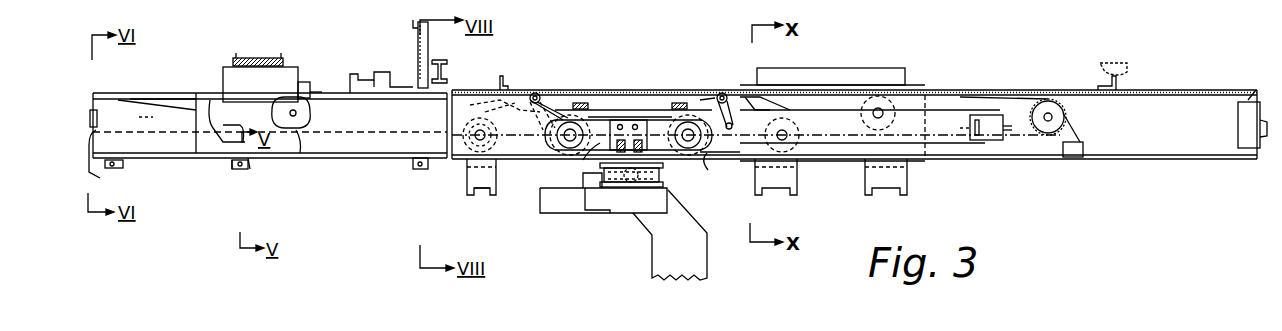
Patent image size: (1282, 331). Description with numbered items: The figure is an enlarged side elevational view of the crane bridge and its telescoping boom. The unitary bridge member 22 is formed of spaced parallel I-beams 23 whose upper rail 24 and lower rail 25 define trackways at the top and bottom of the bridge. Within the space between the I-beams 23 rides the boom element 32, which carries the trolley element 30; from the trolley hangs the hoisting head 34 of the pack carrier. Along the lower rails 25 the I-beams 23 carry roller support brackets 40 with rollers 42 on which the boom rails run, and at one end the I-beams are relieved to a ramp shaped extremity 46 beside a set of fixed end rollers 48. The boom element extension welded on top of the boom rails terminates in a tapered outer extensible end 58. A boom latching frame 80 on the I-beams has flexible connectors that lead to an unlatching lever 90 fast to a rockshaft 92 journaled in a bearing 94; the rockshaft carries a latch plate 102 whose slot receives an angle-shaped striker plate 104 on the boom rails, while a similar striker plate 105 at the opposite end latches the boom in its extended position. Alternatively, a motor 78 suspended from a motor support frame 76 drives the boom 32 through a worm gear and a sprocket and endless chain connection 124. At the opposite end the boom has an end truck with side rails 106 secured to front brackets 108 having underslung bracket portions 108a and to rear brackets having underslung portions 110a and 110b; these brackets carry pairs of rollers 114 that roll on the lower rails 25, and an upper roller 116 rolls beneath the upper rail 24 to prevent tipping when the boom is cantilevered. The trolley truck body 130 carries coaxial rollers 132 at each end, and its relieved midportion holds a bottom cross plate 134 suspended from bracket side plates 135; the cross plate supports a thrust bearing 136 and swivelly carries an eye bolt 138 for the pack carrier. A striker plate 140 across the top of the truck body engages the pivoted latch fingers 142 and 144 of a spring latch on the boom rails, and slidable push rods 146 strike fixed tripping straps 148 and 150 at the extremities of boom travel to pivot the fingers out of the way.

The unitary bridge member 22 is at (1197, 91).
The I-beams 23 is at (1193, 148).
The upper rail 24 is at (1146, 90).
The lower rail 25 is at (1115, 158).
The trolley element 30 is at (628, 109).
The boom element 32 is at (222, 153).
The hoisting head 34 is at (707, 265).
The roller support brackets 40 is at (252, 163).
The rollers 42 is at (234, 169).
The ramp shaped extremity 46 is at (102, 163).
The fixed end rollers 48 is at (116, 168).
The tapered outer extensible end 58 is at (138, 108).
The motor support frame 76 is at (262, 58).
The motor 78 is at (232, 73).
The boom latching frame 80 is at (429, 44).
The unlatching lever 90 is at (421, 80).
The rockshaft 92 is at (383, 78).
The bearing 94 is at (360, 68).
The latch plate 102 is at (1112, 63).
The striker plate 104 is at (500, 77).
The striker plate 105 is at (1098, 84).
The side rails 106 is at (910, 86).
The brackets 108 is at (496, 173).
The underslung bracket portion 108a is at (487, 200).
The underslung portion 110a is at (782, 190).
The underslung portion 110b is at (902, 190).
The rollers 114 is at (497, 139).
The upper roller 116 is at (887, 66).
The sprocket and endless chain connection 124 is at (288, 142).
The trolley truck body 130 is at (663, 122).
The rollers 132 is at (707, 154).
The bottom cross plate 134 is at (638, 112).
The bracket side plates 135 is at (618, 124).
The thrust bearing 136 is at (599, 144).
The eye bolt 138 is at (659, 176).
The striker plate 140 is at (626, 124).
The latch finger 142 is at (700, 100).
The latch finger 144 is at (557, 98).
The push rod 146 is at (148, 108).
The tripping strap 148 is at (1260, 100).
The tripping strap 150 is at (97, 120).